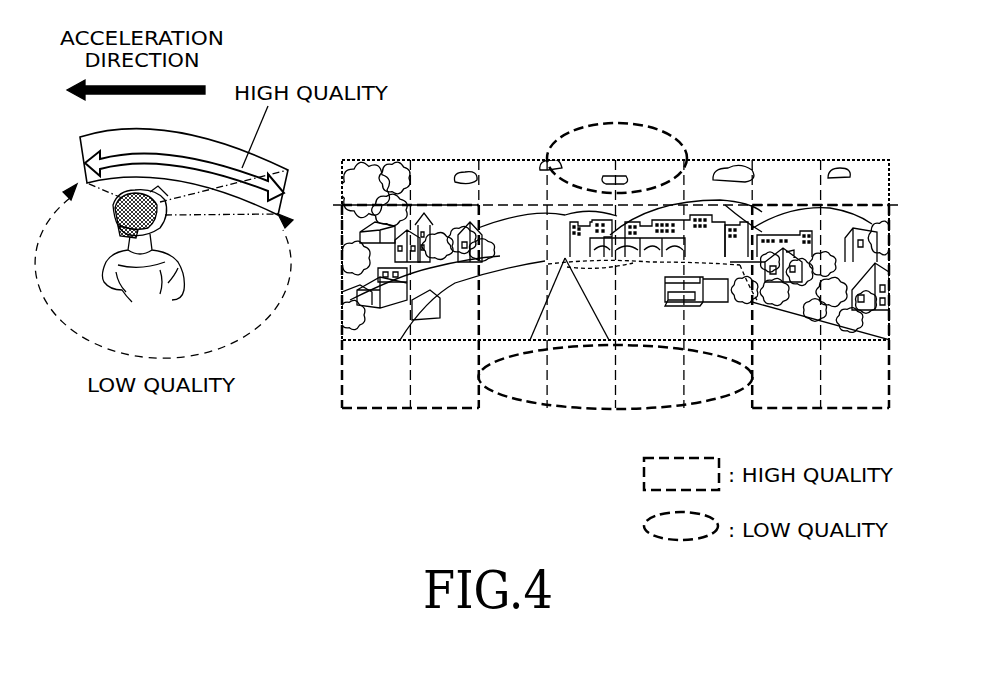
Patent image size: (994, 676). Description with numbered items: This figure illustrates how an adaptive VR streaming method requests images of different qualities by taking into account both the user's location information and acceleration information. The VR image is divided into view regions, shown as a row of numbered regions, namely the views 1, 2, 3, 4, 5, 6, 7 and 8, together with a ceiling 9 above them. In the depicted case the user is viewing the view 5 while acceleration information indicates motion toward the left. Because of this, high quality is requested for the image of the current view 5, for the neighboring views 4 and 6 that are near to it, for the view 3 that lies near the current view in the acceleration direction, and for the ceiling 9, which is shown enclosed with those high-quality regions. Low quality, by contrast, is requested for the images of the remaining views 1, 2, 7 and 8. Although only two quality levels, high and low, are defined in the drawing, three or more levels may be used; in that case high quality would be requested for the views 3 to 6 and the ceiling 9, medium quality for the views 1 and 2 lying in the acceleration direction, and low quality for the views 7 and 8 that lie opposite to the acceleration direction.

The view 1 is at (410, 306).
The view 2 is at (444, 284).
The view 3 is at (513, 284).
The view 4 is at (590, 284).
The view 5 is at (658, 284).
The view 6 is at (616, 284).
The view 7 is at (820, 306).
The view 8 is at (855, 284).
The ceiling 9 is at (617, 158).